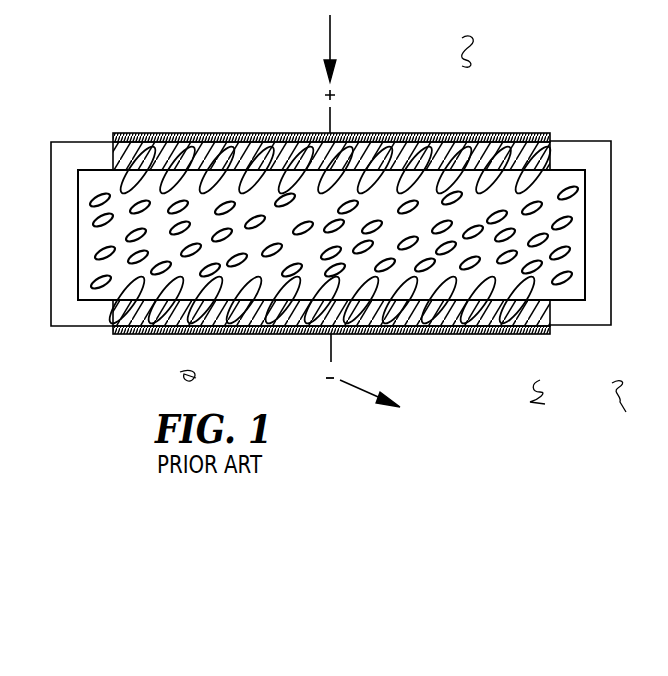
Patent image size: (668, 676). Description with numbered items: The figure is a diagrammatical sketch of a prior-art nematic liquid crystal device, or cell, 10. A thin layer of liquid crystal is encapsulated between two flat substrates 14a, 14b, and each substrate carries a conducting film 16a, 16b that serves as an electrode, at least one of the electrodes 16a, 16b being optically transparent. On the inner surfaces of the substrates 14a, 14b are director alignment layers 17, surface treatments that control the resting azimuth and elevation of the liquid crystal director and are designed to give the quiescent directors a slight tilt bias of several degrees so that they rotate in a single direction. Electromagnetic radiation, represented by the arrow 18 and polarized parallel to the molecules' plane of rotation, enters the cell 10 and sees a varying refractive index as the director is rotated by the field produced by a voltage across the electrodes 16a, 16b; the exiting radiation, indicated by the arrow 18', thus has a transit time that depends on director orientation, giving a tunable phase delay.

The nematic liquid crystal device 10 is at (378, 115).
The flat substrate 14a is at (462, 133).
The flat substrate 14b is at (474, 334).
The conducting film 16a is at (206, 133).
The conducting film 16b is at (222, 334).
The alignment layers 17 is at (88, 182).
The arrow 18 is at (358, 74).
The arrow 18' is at (382, 378).